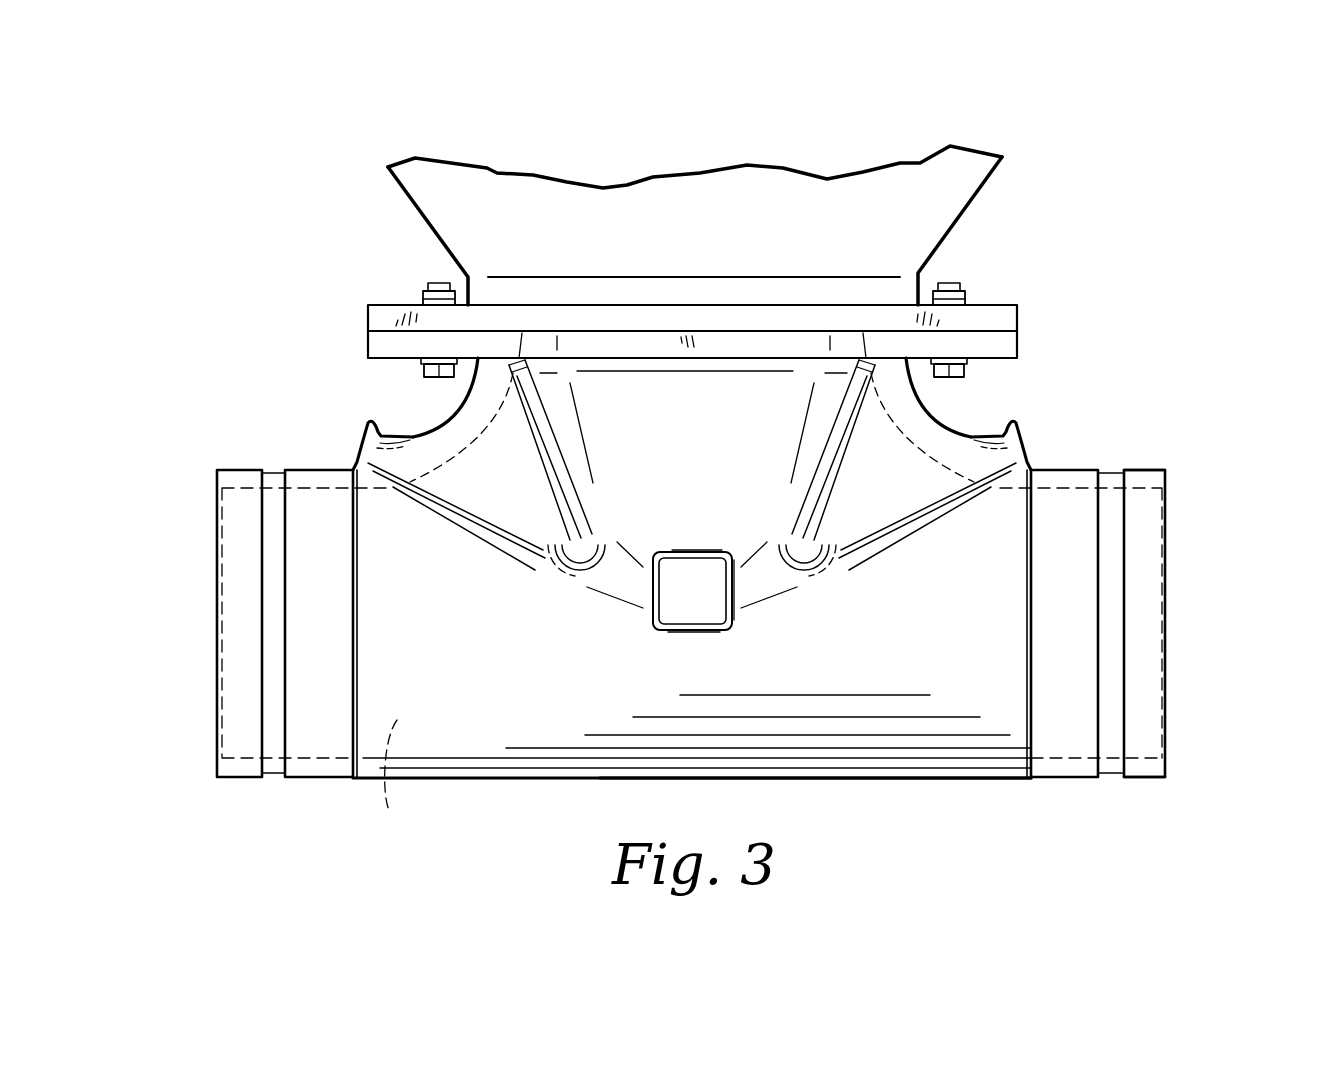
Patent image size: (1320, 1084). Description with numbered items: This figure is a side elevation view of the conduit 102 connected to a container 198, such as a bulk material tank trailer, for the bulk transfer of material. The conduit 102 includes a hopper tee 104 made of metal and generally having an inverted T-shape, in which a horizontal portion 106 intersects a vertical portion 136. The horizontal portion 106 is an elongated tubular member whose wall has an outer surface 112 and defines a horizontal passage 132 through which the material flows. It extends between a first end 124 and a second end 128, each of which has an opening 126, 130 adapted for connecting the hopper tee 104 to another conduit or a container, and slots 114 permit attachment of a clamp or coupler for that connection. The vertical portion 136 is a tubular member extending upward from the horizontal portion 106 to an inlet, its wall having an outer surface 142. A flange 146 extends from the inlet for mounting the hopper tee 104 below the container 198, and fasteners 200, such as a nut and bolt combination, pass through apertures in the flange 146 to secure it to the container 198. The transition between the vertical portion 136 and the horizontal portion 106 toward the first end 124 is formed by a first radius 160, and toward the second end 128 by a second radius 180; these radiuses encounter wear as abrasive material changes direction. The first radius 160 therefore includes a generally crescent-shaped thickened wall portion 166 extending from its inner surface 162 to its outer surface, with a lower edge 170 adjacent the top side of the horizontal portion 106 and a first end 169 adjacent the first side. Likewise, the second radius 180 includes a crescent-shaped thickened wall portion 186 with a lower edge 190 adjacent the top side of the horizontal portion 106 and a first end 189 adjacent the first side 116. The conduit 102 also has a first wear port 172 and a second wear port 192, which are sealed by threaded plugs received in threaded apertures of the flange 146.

The conduit 102 is at (1197, 524).
The hopper tee 104 is at (1167, 777).
The horizontal portion 106 is at (898, 800).
The outer surface 112 is at (477, 659).
The slots 114 is at (262, 780).
The first side 116 is at (515, 725).
The first end 124 is at (220, 468).
The opening 126 is at (217, 645).
The second end 128 is at (1163, 468).
The opening 130 is at (1168, 598).
The horizontal passage 132 is at (377, 784).
The vertical portion 136 is at (1077, 369).
The outer surface 142 is at (736, 479).
The flange 146 is at (1020, 308).
The first radius 160 is at (477, 506).
The inner surface 162 is at (493, 443).
The thickened wall portion 166 is at (517, 502).
The first end 169 is at (587, 566).
The lower edge 170 is at (427, 500).
The first wear port 172 is at (357, 426).
The second radius 180 is at (928, 504).
The thickened wall portion 186 is at (888, 493).
The first end 189 is at (797, 566).
The lower edge 190 is at (972, 500).
The second wear port 192 is at (1007, 427).
The container 198 is at (963, 193).
The fasteners 200 is at (421, 368).